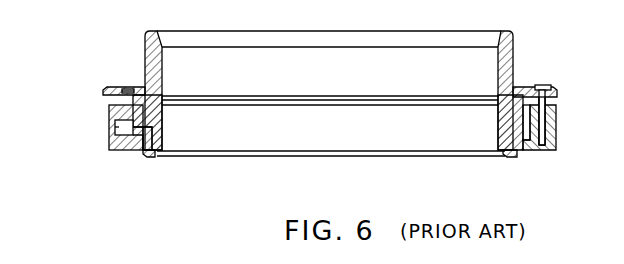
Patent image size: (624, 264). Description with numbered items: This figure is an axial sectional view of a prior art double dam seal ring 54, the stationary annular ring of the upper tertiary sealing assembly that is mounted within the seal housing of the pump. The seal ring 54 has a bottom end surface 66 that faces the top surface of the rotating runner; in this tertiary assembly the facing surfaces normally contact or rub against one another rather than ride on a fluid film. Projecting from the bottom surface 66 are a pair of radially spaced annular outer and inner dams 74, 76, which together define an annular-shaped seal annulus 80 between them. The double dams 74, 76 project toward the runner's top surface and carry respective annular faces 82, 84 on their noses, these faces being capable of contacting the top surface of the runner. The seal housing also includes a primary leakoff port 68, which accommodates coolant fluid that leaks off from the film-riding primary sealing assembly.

The seal ring 54 is at (530, 87).
The bottom end surface 66 is at (218, 157).
The primary leakoff port 68 is at (113, 128).
The outer dam 74 is at (144, 153).
The inner dam 76 is at (152, 153).
The seal annulus 80 is at (510, 153).
The annular face 82 is at (515, 153).
The annular face 84 is at (508, 153).